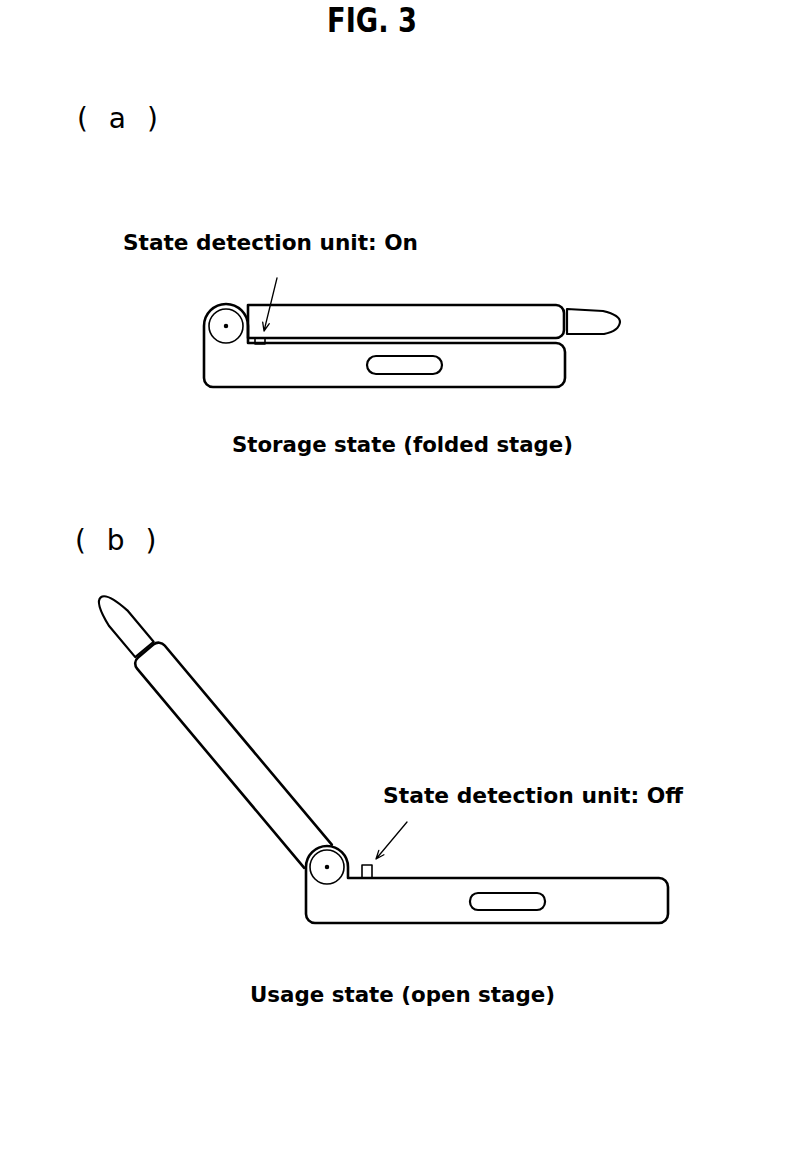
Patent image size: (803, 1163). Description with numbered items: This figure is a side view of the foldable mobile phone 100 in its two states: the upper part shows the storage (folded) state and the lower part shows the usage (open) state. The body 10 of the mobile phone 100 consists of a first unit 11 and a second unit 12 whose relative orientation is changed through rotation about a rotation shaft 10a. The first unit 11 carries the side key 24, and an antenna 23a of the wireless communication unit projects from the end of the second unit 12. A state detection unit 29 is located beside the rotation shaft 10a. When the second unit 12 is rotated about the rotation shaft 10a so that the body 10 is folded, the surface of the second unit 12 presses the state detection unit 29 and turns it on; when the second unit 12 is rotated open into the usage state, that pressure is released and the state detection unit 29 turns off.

The mobile phone 100 is at (456, 209).
The body 10 is at (555, 262).
The rotation shaft 10a is at (226, 326).
The first unit 11 is at (534, 360).
The second unit 12 is at (490, 313).
The antenna 23a is at (600, 316).
The side key 24 is at (402, 365).
The state detection unit 29 is at (260, 341).